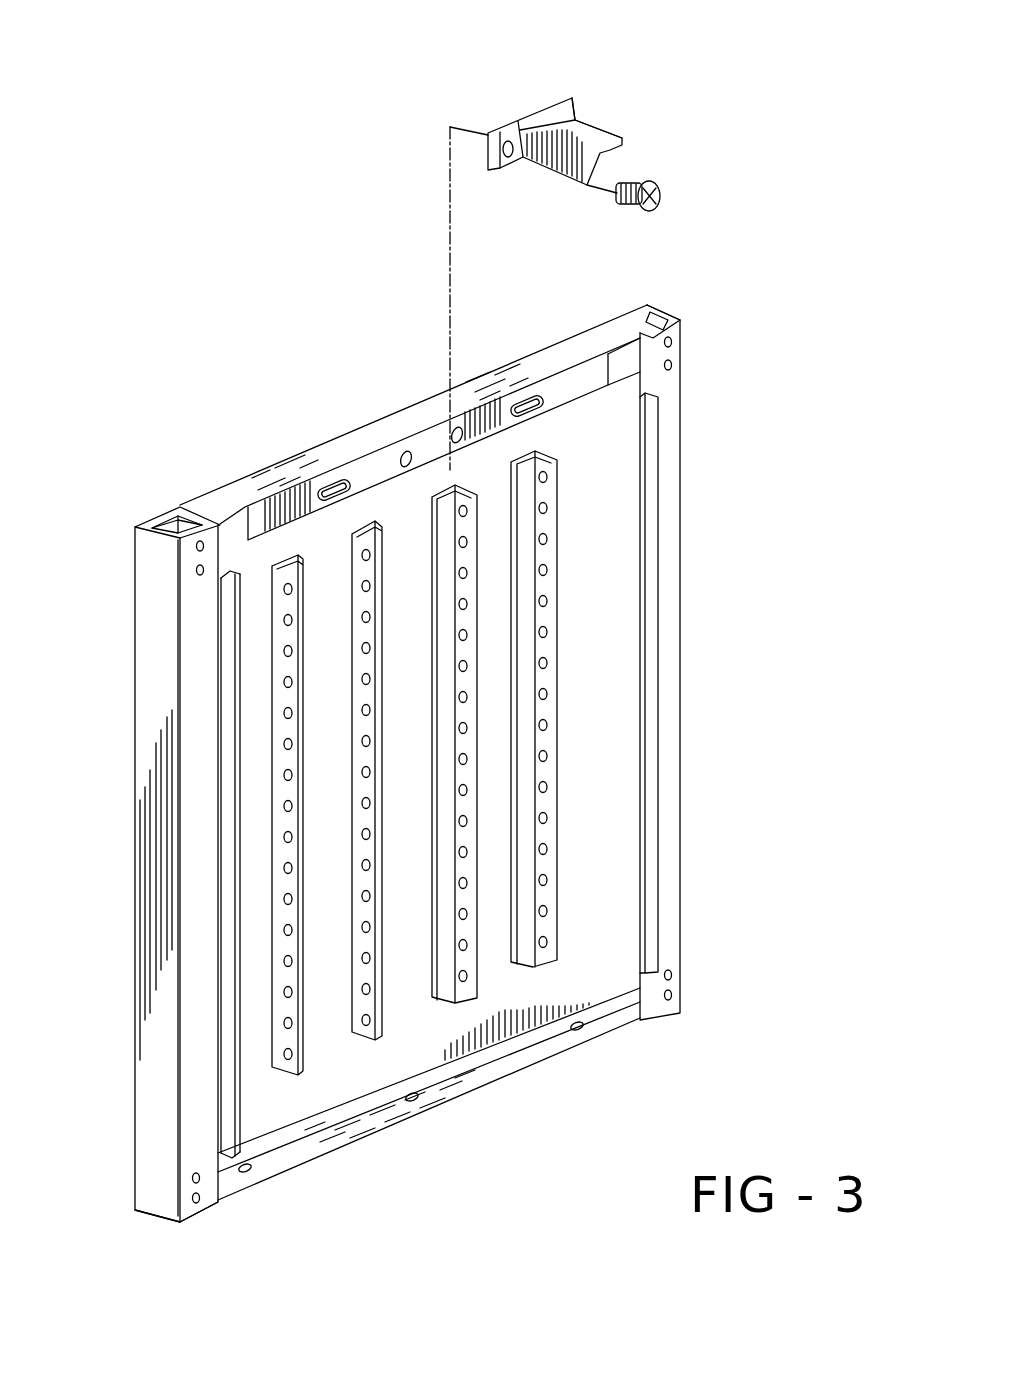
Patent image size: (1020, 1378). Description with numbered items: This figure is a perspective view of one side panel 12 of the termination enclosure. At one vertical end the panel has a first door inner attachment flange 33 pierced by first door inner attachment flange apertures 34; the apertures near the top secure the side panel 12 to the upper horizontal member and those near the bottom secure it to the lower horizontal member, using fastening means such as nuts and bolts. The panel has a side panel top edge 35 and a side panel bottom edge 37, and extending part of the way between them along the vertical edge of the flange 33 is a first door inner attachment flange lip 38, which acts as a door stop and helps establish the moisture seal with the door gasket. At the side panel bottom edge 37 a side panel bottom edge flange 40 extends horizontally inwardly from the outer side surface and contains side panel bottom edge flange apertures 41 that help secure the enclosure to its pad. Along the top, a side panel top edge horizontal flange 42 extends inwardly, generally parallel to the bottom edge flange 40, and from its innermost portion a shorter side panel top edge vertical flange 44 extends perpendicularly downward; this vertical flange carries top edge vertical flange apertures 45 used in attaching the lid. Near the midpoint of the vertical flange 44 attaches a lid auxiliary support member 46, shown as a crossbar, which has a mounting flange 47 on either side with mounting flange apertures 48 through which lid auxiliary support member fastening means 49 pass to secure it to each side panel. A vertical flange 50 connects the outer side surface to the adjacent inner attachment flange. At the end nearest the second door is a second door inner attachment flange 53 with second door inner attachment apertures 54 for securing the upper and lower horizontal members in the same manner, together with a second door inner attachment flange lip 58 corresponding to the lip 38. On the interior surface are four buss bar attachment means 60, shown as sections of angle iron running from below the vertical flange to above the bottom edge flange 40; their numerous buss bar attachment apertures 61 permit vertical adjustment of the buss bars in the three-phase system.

The side panel 12 is at (256, 350).
The first door inner attachment flange 33 is at (140, 851).
The first door inner attachment flange apertures 34 is at (197, 548).
The side panel top edge 35 is at (183, 520).
The side panel bottom edge 37 is at (148, 1210).
The first door inner attachment flange lip 38 is at (225, 647).
The side panel bottom edge flange 40 is at (429, 1094).
The side panel bottom edge flange apertures 41 is at (582, 1028).
The side panel top edge horizontal flange 42 is at (413, 399).
The side panel top edge vertical flange 44 is at (578, 383).
The top edge vertical flange apertures 45 is at (340, 488).
The lid auxiliary support member 46 is at (582, 246).
The mounting flange 47 is at (572, 112).
The mounting flange apertures 48 is at (510, 143).
The lid auxiliary support member fastening means 49 is at (658, 190).
The vertical flange 50 is at (662, 310).
The second door inner attachment flange 53 is at (710, 649).
The second door inner attachment apertures 54 is at (670, 343).
The second door inner attachment flange lip 58 is at (648, 468).
The buss bar attachment means 60 is at (443, 777).
The holes in vertical bars 61 is at (546, 570).